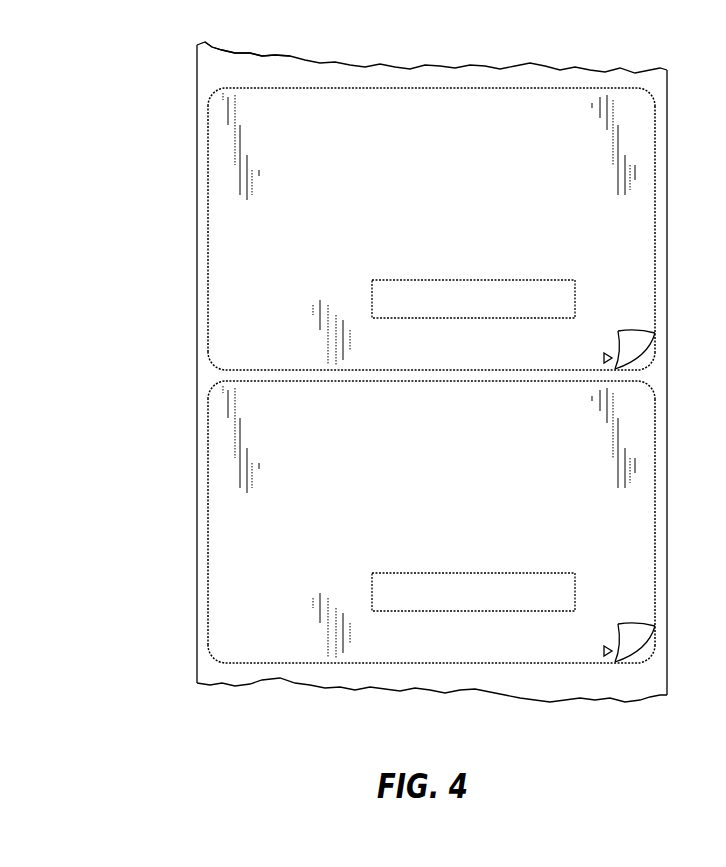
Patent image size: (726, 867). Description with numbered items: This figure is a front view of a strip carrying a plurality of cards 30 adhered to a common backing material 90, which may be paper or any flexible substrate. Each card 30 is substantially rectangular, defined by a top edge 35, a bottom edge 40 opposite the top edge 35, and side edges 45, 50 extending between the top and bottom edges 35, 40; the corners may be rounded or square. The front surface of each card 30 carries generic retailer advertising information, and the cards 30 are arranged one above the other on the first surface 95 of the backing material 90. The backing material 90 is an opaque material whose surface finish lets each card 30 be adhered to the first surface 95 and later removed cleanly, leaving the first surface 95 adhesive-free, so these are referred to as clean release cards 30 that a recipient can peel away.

The card 30 is at (173, 140).
The top edge 35 is at (450, 88).
The bottom edge 40 is at (255, 370).
The side edge 45 is at (197, 213).
The side edge 50 is at (655, 243).
The backing material 90 is at (197, 70).
The first surface 95 is at (244, 70).